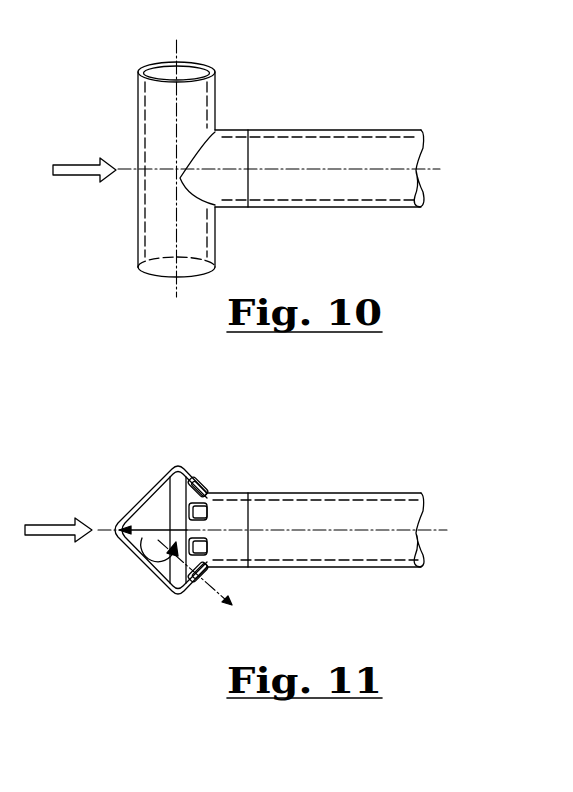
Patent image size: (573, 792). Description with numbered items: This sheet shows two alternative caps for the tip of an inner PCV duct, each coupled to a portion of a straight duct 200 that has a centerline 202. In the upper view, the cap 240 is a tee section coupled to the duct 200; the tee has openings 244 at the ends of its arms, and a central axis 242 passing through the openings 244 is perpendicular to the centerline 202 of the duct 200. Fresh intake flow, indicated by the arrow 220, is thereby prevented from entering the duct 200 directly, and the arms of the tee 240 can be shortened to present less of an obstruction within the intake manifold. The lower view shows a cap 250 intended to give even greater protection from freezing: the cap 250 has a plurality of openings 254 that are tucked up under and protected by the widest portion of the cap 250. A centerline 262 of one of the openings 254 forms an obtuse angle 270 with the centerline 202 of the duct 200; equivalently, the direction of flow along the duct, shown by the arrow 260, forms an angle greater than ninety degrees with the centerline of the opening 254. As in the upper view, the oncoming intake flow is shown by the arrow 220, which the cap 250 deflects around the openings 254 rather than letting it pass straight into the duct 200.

In FIG. 10, the straight duct 200 is at (351, 130).
In FIG. 11, the straight duct 200 is at (335, 492).
In FIG. 10, the centerline of duct 202 is at (443, 168).
In FIG. 11, the centerline of duct 202 is at (428, 528).
In FIG. 10, the arrow indicating fresh intake flow 220 is at (98, 162).
In FIG. 11, the arrow indicating fresh intake flow 220 is at (72, 523).
In FIG. 10, the cap (tee section) 240 is at (158, 220).
In FIG. 10, the central axis through openings 242 is at (184, 45).
In FIG. 10, the openings 244 is at (165, 72).
In FIG. 11, the cap 250 is at (140, 517).
In FIG. 11, the openings 254 is at (210, 512).
In FIG. 11, the arrow indicating direction of flow 260 is at (152, 530).
In FIG. 11, the centerline of opening 262 is at (210, 600).
In FIG. 11, the obtuse angle 270 is at (146, 553).